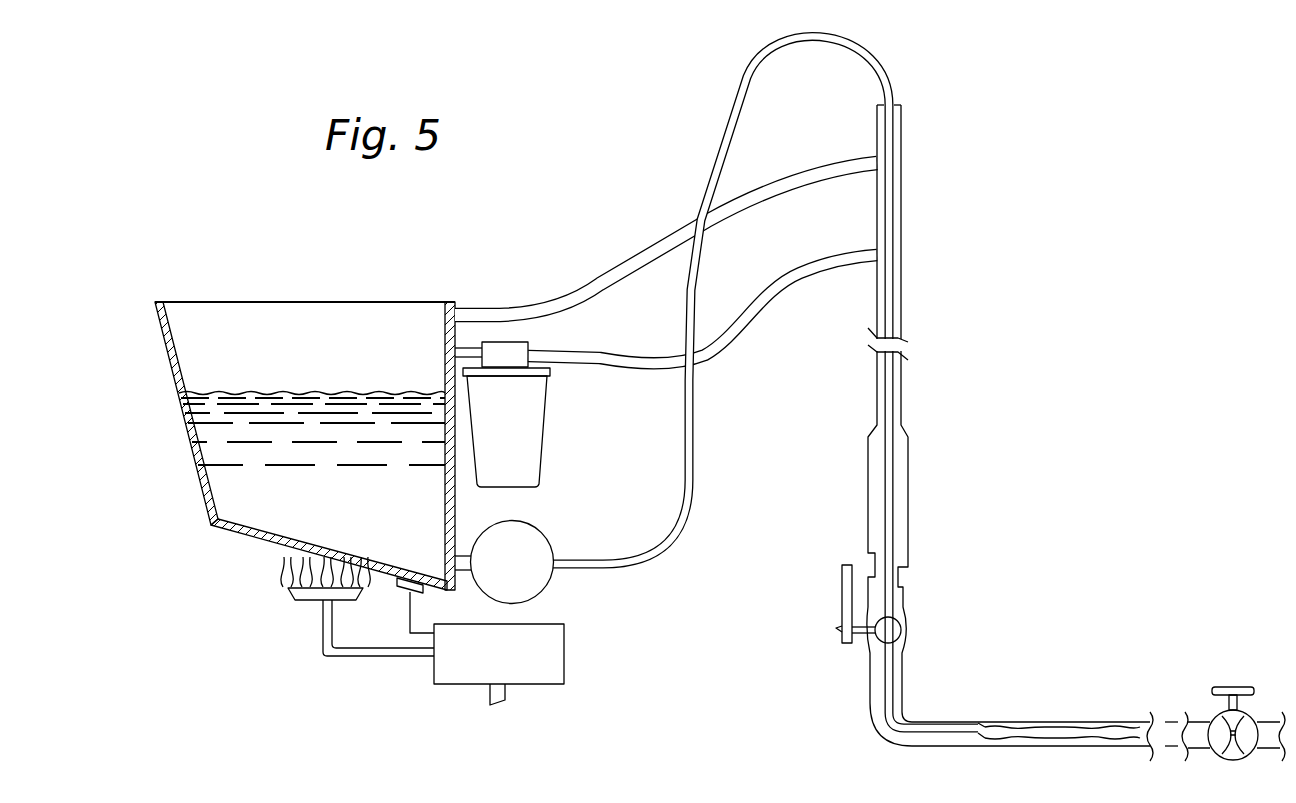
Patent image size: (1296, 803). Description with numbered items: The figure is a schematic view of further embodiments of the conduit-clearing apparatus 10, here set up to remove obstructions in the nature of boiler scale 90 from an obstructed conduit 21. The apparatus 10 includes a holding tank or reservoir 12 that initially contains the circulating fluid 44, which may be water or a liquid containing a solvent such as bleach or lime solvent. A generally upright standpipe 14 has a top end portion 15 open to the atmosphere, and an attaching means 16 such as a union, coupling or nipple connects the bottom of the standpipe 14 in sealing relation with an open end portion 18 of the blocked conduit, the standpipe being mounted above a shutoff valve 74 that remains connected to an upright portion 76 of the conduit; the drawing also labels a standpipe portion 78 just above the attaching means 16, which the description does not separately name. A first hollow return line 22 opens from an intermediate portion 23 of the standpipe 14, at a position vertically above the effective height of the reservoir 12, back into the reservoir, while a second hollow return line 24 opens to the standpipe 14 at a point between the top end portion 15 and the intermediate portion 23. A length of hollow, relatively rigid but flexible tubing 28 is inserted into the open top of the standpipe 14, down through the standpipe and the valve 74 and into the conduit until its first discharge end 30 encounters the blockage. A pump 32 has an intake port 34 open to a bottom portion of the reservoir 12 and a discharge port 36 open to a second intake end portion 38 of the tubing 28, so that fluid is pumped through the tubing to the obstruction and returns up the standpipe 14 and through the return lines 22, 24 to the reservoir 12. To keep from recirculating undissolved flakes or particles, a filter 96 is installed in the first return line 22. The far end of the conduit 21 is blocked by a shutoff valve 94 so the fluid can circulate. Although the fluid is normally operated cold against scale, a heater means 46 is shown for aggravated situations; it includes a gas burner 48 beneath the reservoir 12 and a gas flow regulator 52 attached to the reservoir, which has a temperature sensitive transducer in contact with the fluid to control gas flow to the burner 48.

The apparatus 10 is at (594, 240).
The holding tank or reservoir 12 is at (299, 435).
The standpipe 14 is at (980, 435).
The top end portion 15 is at (980, 435).
The attaching means 16 is at (980, 445).
The open end portion 18 is at (1008, 445).
The obstructed conduit 21 is at (1008, 445).
The first hollow return line 22 is at (739, 307).
The intermediate portion 23 is at (873, 251).
The second hollow return line 24 is at (616, 275).
The flexible tubing 28 is at (765, 381).
The first discharge end 30 is at (970, 742).
The pump 32 is at (527, 549).
The intake port 34 is at (474, 553).
The discharge port 36 is at (765, 382).
The second intake end portion 38 is at (568, 560).
The circulating fluid 44 is at (218, 497).
The heater means 46 is at (429, 649).
The gas burner 48 is at (292, 598).
The gas flow regulator 52 is at (565, 679).
The shutoff valve 74 is at (910, 633).
The upright portion 76 is at (911, 613).
The tube enlargement 78 is at (980, 445).
The boiler scale 90 is at (1058, 722).
The shutoff valve 94 is at (1230, 743).
The filter 96 is at (527, 400).